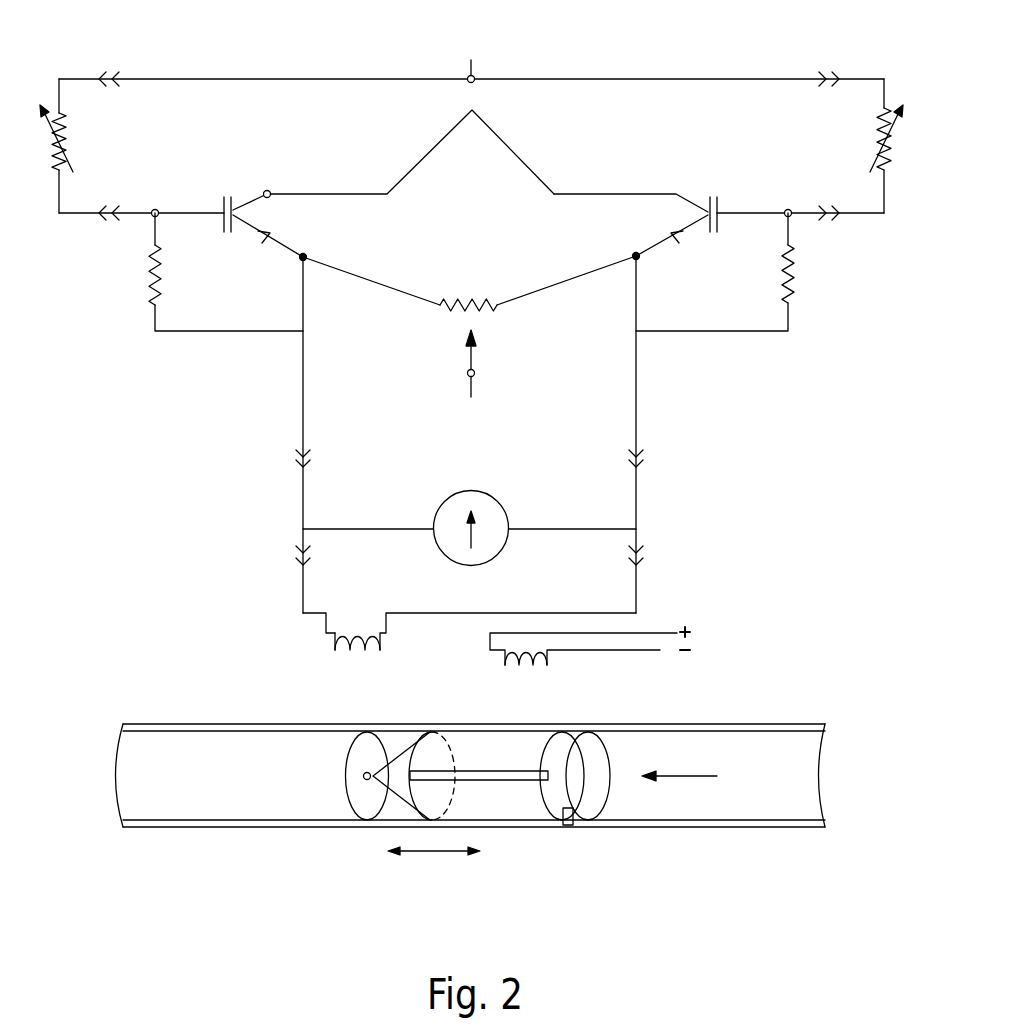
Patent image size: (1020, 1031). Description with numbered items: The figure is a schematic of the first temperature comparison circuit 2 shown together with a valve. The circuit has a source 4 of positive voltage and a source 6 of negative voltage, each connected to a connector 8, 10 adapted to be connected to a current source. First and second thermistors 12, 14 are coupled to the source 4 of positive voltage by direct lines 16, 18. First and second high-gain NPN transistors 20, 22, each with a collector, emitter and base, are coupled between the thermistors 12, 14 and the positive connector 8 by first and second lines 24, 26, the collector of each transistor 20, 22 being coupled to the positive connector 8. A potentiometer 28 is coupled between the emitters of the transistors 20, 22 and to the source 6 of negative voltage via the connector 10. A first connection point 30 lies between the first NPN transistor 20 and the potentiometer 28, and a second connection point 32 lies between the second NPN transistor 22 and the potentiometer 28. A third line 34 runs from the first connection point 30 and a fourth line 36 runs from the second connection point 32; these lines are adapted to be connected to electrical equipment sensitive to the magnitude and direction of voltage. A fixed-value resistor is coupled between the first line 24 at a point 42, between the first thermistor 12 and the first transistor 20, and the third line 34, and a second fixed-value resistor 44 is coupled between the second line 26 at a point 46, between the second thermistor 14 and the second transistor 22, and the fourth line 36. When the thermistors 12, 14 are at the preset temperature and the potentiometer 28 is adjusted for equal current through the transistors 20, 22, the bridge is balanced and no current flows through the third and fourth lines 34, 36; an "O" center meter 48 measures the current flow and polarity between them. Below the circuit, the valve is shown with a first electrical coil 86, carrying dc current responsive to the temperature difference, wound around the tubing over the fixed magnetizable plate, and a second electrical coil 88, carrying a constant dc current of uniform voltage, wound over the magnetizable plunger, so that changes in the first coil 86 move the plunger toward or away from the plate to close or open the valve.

The first temperature comparison circuit 2 is at (760, 490).
The source of positive voltage 4 is at (468, 63).
The source of negative voltage 6 is at (468, 391).
The connector 8 is at (472, 75).
The connector 10 is at (474, 373).
The first thermistor 12 is at (58, 112).
The second thermistor 14 is at (887, 110).
The direct line 16 is at (244, 79).
The direct line 18 is at (677, 78).
The first high-gain NPN transistor 20 is at (226, 201).
The second high-gain NPN transistor 22 is at (720, 206).
The first line 24 is at (180, 212).
The second line 26 is at (590, 193).
The potentiometer 28 is at (471, 300).
The first connection point 30 is at (305, 255).
The second connection point 32 is at (633, 255).
The third line 34 is at (303, 406).
The fourth line 36 is at (636, 378).
The point 42 is at (152, 216).
The second fixed-value resistor 44 is at (148, 283).
The point 46 is at (790, 217).
The "O" center meter 48 is at (505, 542).
The first electrical coil 86 is at (336, 646).
The second electrical coil 88 is at (549, 652).